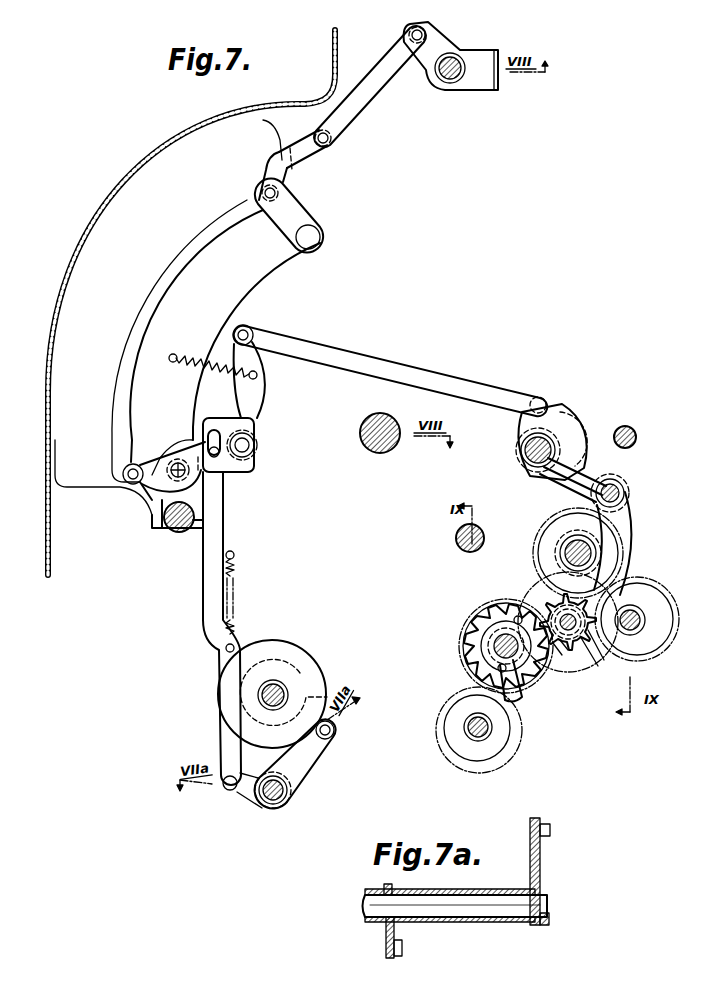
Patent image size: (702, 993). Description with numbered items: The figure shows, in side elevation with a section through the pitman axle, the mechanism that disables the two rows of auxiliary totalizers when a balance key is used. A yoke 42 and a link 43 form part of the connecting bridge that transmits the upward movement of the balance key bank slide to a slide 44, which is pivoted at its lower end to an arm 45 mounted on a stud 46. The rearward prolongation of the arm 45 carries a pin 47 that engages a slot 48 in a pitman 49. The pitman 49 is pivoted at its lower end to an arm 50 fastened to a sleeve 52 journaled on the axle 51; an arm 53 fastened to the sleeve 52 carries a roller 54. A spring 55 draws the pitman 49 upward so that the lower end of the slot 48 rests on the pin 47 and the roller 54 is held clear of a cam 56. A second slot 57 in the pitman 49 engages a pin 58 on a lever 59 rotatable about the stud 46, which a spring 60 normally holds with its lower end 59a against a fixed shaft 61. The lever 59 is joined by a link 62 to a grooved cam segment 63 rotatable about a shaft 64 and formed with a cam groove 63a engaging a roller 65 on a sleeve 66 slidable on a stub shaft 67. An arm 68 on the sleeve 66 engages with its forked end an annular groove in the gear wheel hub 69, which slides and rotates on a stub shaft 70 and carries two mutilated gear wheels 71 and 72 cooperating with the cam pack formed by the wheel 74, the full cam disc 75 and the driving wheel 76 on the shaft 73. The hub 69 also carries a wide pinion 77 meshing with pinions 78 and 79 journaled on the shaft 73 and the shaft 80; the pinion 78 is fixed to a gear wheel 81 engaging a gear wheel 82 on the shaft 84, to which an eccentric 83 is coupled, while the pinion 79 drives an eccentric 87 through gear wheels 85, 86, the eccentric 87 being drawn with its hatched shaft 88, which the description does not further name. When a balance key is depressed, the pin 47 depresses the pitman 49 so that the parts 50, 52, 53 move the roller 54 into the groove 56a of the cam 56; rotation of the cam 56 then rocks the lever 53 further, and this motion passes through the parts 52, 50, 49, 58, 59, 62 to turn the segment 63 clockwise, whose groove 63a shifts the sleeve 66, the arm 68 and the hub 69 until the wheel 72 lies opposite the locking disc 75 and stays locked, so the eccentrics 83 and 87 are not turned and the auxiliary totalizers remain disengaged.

In FIG. 7, the yoke 42 is at (470, 88).
In FIG. 7, the link 43 is at (372, 98).
In FIG. 7, the slide 44 is at (150, 293).
In FIG. 7, the arm 45 is at (138, 481).
In FIG. 7, the stud 46 is at (172, 462).
In FIG. 7, the pin 47 is at (218, 456).
In FIG. 7, the slot 48 is at (213, 430).
In FIG. 7, the pitman 49 is at (205, 600).
In FIG. 7A, the pitman 49 is at (398, 942).
In FIG. 7, the arm 50 is at (240, 793).
In FIG. 7A, the arm 50 is at (386, 928).
In FIG. 7, the axle 51 is at (273, 805).
In FIG. 7A, the axle 51 is at (450, 917).
In FIG. 7, the sleeve 52 is at (288, 800).
In FIG. 7A, the sleeve 52 is at (455, 891).
In FIG. 7, the arm 53 is at (306, 766).
In FIG. 7A, the arm 53 is at (530, 858).
In FIG. 7, the roller 54 is at (333, 734).
In FIG. 7A, the roller 54 is at (545, 832).
In FIG. 7, the spring 55 is at (238, 563).
In FIG. 7, the cam 56 is at (283, 650).
In FIG. 7, the groove 56a is at (268, 735).
In FIG. 7, the second slot 57 is at (254, 441).
In FIG. 7, the pin 58 is at (252, 452).
In FIG. 7, the lever 59 is at (270, 392).
In FIG. 7, the lower end of lever 59a is at (152, 520).
In FIG. 7, the spring 60 is at (207, 362).
In FIG. 7, the fixed shaft 61 is at (178, 531).
In FIG. 7, the link 62 is at (410, 368).
In FIG. 7, the grooved cam segment 63 is at (580, 424).
In FIG. 7, the cam groove 63a is at (570, 412).
In FIG. 7, the shaft 64 is at (525, 450).
In FIG. 7, the roller 65 is at (588, 470).
In FIG. 7, the sleeve 66 is at (630, 497).
In FIG. 7, the stub shaft 67 is at (620, 485).
In FIG. 7, the arm 68 is at (634, 533).
In FIG. 7, the gear wheel hub 69 is at (571, 636).
In FIG. 7, the stub shaft 70 is at (550, 604).
In FIG. 7, the mutilated gear wheel 71 is at (583, 635).
In FIG. 7, the mutilated gear wheel 72 is at (558, 655).
In FIG. 7, the shaft 73 is at (517, 660).
In FIG. 7, the wheel 74 is at (505, 606).
In FIG. 7, the full cam disc 75 is at (464, 646).
In FIG. 7, the driving wheel 76 is at (467, 630).
In FIG. 7, the wide pinion 77 is at (540, 588).
In FIG. 7, the pinion 78 is at (506, 670).
In FIG. 7, the pinion 79 is at (572, 535).
In FIG. 7, the shaft 80 is at (565, 548).
In FIG. 7, the gear wheel 81 is at (488, 612).
In FIG. 7, the gear wheel 82 is at (446, 702).
In FIG. 7, the eccentric 83 is at (512, 737).
In FIG. 7, the shaft 84 is at (478, 742).
In FIG. 7, the gear wheel 85 is at (534, 551).
In FIG. 7, the gear wheel 86 is at (652, 653).
In FIG. 7, the eccentric 87 is at (655, 584).
In FIG. 7, the shaft 88 is at (632, 612).